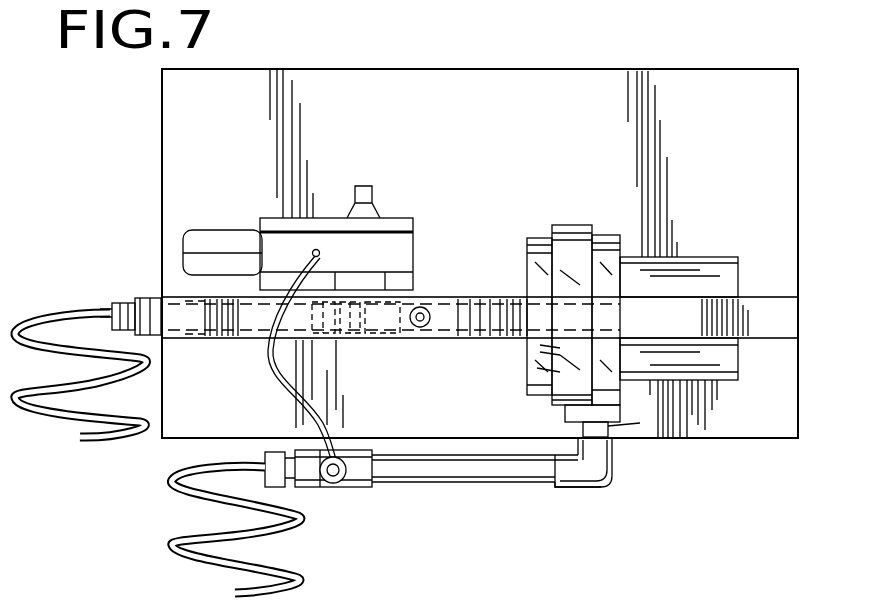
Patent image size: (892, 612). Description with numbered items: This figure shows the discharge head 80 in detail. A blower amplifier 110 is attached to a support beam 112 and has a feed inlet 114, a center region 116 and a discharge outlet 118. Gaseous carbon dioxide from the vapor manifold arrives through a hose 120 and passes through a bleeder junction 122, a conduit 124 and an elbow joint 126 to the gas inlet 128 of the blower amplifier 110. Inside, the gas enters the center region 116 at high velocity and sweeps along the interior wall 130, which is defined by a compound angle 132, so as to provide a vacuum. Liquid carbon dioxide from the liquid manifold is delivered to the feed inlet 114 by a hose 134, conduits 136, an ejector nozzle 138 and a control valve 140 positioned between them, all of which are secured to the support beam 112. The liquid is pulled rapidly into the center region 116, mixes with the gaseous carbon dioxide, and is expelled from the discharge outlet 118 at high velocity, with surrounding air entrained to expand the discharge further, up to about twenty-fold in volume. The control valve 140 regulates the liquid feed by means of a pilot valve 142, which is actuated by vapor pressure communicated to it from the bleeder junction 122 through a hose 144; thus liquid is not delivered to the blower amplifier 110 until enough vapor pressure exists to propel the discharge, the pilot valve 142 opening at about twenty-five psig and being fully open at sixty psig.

The discharge head 80 is at (715, 581).
The blower amplifier 110 is at (650, 262).
The support beam 112 is at (182, 338).
The feed inlet 114 is at (552, 350).
The center region 116 is at (597, 283).
The discharge outlet 118 is at (742, 284).
The hose 120 is at (168, 488).
The bleeder junction 122 is at (312, 478).
The conduit 124 is at (488, 463).
The elbow joint 126 is at (588, 494).
The gas inlet 128 is at (612, 424).
The interior wall 130 is at (708, 365).
The compound angle 132 is at (537, 372).
The hose 134 is at (80, 308).
The conduits 136 is at (235, 338).
The ejector nozzle 138 is at (395, 297).
The control valve 140 is at (387, 340).
The pilot valve 142 is at (398, 252).
The hose 144 is at (318, 403).